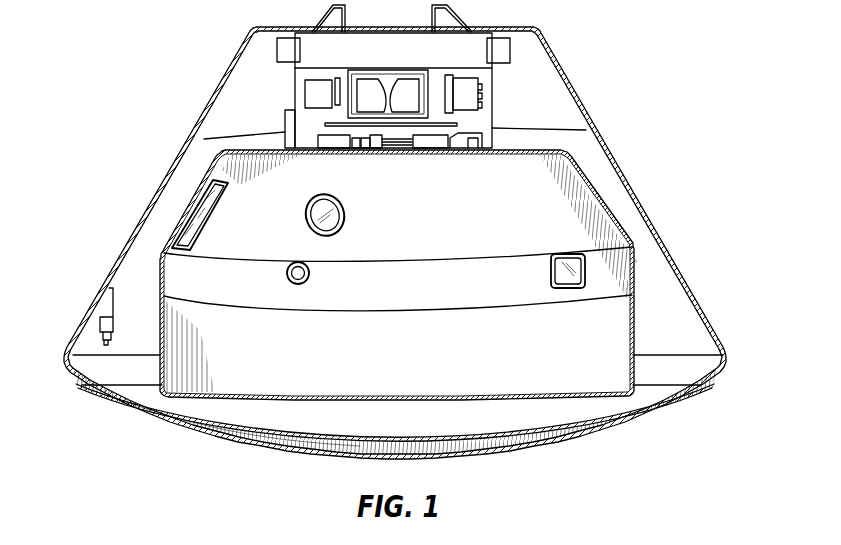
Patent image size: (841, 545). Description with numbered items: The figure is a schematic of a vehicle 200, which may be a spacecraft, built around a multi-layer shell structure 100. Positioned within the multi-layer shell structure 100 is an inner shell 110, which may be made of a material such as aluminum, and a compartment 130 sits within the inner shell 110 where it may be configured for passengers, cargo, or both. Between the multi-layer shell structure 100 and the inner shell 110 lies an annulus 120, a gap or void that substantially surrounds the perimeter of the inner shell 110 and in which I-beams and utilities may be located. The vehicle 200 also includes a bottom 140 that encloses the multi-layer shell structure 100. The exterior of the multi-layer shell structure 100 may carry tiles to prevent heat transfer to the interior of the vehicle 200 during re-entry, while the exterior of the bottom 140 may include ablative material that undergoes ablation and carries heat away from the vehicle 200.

The vehicle 200 is at (135, 42).
The multi-layer shell structure 100 is at (641, 195).
The inner shell 110 is at (641, 262).
The annulus 120 is at (598, 168).
The compartment 130 is at (419, 297).
The bottom 140 is at (153, 402).